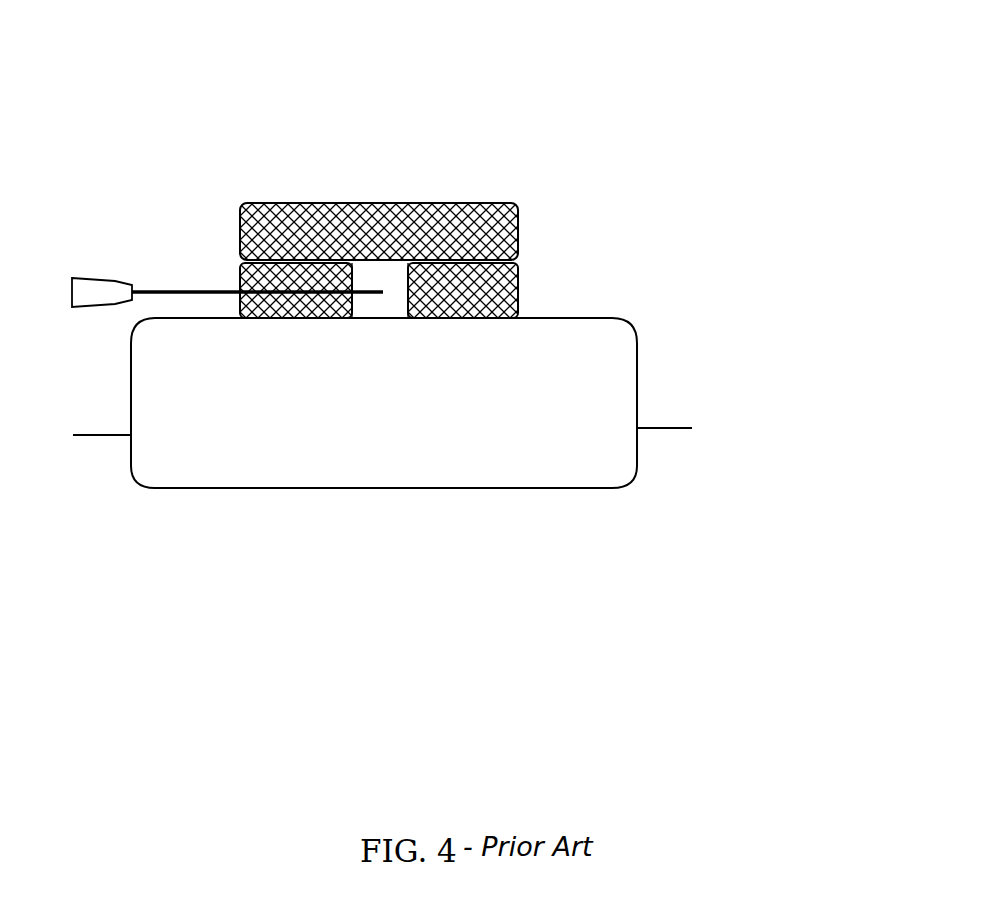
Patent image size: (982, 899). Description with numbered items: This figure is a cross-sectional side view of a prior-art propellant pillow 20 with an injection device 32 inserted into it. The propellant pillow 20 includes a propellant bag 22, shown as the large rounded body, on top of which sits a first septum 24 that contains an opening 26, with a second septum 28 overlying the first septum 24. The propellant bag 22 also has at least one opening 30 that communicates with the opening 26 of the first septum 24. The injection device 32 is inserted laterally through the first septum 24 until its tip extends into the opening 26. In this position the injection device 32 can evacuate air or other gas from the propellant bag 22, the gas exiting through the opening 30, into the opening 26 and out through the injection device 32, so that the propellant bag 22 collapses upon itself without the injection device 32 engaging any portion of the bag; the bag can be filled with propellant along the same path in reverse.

The propellant pillow 20 is at (764, 86).
The propellant bag 22 is at (185, 497).
The first septum 24 is at (521, 284).
The opening 26 is at (392, 277).
The second septum 28 is at (346, 230).
The opening 30 is at (383, 322).
The injection device 32 is at (182, 287).